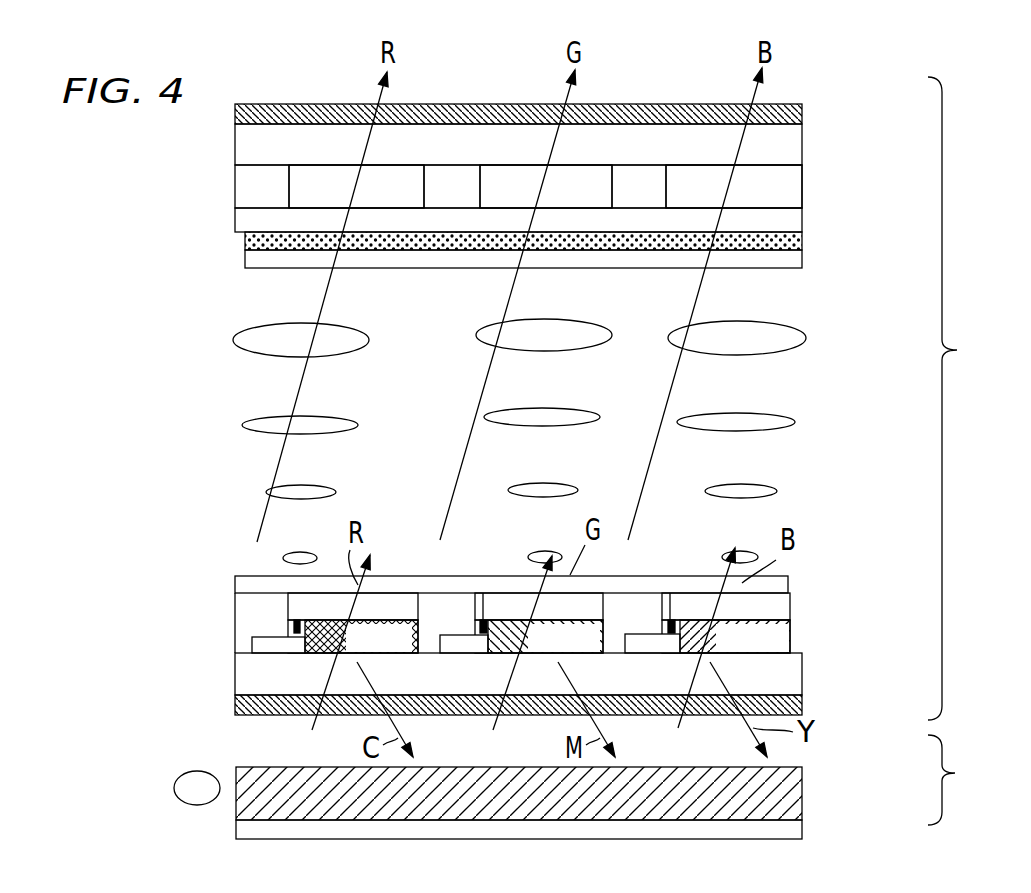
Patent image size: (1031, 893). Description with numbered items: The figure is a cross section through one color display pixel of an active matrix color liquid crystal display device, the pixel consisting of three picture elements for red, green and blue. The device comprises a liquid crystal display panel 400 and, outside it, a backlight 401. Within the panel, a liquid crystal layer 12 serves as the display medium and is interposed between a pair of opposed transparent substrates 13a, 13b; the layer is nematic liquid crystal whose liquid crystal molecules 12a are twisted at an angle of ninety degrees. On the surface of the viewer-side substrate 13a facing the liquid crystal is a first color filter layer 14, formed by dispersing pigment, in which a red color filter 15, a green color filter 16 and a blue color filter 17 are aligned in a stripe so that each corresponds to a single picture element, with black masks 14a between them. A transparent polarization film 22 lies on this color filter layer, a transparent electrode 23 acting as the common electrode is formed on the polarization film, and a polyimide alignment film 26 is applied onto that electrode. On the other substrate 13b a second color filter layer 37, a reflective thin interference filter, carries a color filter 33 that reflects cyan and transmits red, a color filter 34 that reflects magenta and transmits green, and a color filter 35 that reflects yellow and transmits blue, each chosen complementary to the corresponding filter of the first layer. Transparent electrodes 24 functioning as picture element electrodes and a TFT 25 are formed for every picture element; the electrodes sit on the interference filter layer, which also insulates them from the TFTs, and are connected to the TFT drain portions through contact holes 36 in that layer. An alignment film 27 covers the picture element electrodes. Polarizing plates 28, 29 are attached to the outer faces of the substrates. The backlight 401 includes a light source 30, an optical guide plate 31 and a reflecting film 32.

The polarizing plate 28 is at (802, 104).
The transparent substrate 13a is at (803, 128).
The first color filter layer 14 is at (803, 183).
The black mask 14a is at (270, 165).
The red color filter 15 is at (356, 186).
The green color filter 16 is at (546, 186).
The blue color filter 17 is at (734, 186).
The transparent polarization film 22 is at (803, 217).
The transparent electrode 23 is at (803, 238).
The alignment film 26 is at (803, 256).
The liquid crystal molecules 12a is at (806, 335).
The liquid crystal layer 12 is at (566, 441).
The alignment film 27 is at (788, 580).
The transparent electrode 24 is at (790, 597).
The TFT 25 is at (790, 613).
The second color filter layer 37 is at (792, 628).
The color filter 33 is at (361, 638).
The color filter 34 is at (545, 638).
The color filter 35 is at (735, 638).
The contact hole 36 is at (297, 620).
The transparent substrate 13b is at (803, 670).
The polarizing plate 29 is at (803, 698).
The optical guide plate 31 is at (803, 784).
The reflecting film 32 is at (803, 825).
The light source 30 is at (173, 798).
The liquid crystal display panel 400 is at (970, 398).
The backlight 401 is at (965, 780).